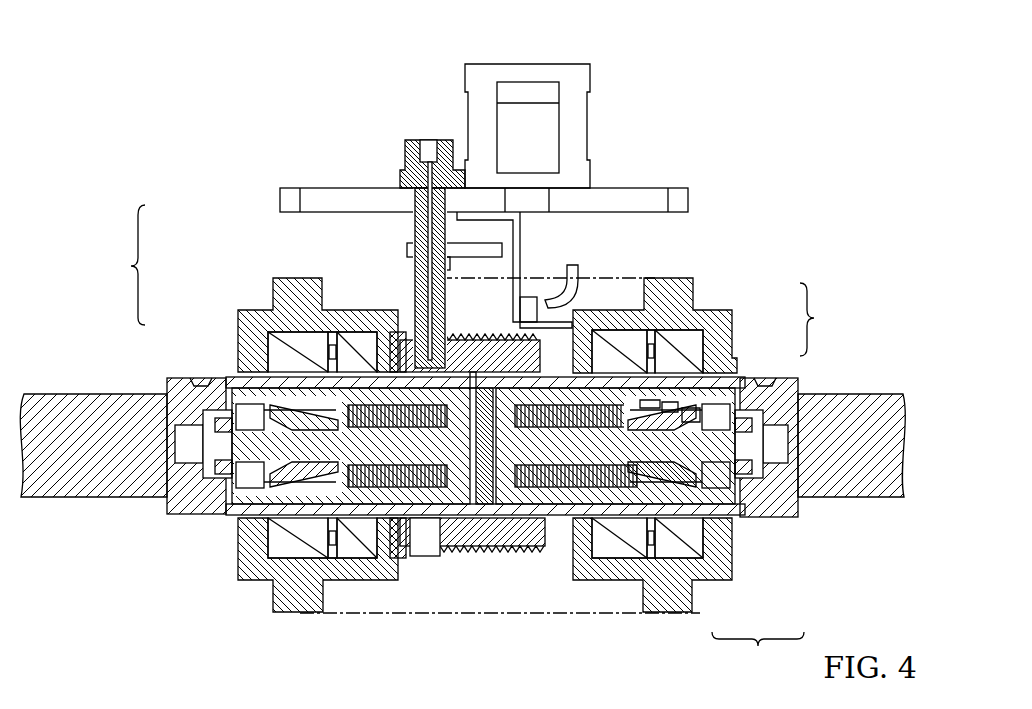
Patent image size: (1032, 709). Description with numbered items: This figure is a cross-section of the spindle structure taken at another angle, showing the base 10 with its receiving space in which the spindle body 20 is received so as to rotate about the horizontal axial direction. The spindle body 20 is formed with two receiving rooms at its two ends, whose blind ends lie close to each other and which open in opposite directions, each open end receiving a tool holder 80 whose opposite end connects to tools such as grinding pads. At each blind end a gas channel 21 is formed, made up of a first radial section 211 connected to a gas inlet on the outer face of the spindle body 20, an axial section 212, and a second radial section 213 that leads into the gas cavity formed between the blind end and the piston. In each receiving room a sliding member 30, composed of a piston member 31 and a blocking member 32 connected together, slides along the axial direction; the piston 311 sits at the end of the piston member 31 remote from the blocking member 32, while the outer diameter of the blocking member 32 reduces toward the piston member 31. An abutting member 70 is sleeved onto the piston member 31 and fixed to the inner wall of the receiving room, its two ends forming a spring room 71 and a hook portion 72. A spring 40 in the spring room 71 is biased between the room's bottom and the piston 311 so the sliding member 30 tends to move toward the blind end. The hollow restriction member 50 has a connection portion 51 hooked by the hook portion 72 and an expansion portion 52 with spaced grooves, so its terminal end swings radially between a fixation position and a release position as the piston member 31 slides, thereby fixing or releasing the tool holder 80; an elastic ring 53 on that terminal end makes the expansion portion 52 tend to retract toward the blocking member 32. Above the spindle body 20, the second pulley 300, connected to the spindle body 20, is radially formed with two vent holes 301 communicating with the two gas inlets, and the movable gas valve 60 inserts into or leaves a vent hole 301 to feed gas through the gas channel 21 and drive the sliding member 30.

The base 10 is at (257, 573).
The spindle body 20 is at (498, 433).
The gas channel 21 is at (430, 427).
The first radial section 211 is at (380, 365).
The axial section 212 is at (448, 383).
The second radial section 213 is at (470, 386).
The sliding member 30 is at (758, 650).
The piston member 31 is at (608, 462).
The blocking member 32 is at (738, 505).
The second pulley 300 is at (467, 500).
The vent hole 301 is at (430, 548).
The piston 311 is at (500, 552).
The spring 40 is at (550, 508).
The restriction member 50 is at (738, 352).
The connection portion 51 is at (648, 404).
The expansion portion 52 is at (670, 408).
The elastic ring 53 is at (692, 416).
The gas valve 60 is at (442, 378).
The abutting member 70 is at (650, 398).
The spring room 71 is at (358, 488).
The hook portion 72 is at (318, 492).
The tool holder 80 is at (95, 480).